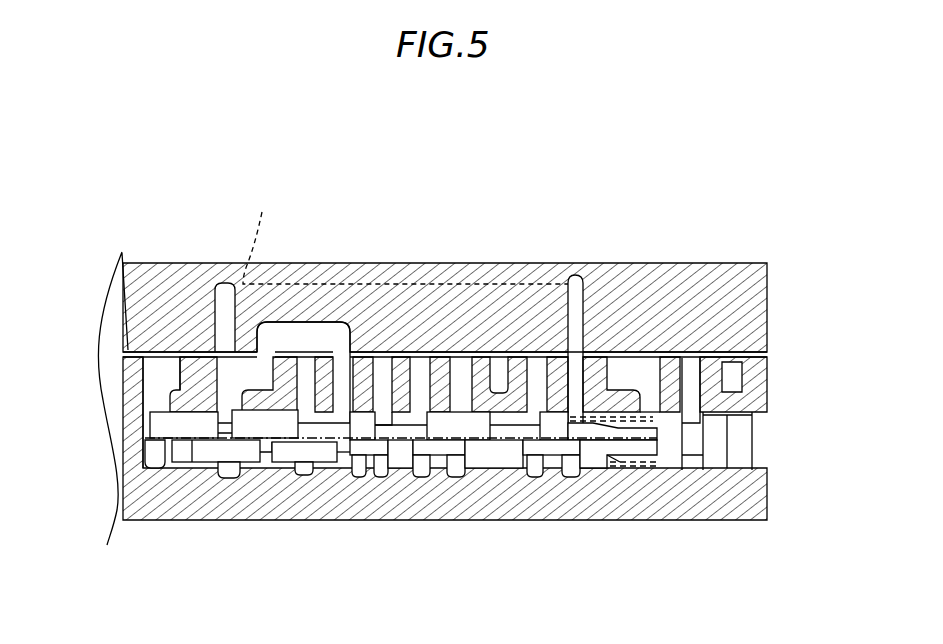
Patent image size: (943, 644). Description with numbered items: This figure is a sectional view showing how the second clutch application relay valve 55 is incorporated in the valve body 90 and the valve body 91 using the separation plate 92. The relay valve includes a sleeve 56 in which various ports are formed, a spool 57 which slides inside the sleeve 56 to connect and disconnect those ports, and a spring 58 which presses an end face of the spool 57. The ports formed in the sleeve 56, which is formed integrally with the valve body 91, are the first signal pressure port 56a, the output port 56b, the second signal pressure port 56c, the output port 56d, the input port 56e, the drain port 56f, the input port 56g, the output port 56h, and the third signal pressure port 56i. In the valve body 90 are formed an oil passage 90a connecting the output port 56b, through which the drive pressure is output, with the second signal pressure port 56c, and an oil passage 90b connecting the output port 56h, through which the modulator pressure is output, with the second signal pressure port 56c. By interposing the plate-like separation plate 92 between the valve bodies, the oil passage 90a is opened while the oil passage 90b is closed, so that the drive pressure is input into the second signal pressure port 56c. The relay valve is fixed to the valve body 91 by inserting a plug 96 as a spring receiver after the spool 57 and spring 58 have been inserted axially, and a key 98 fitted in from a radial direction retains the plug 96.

The second clutch application relay valve 55 is at (786, 450).
The sleeve 56 is at (258, 485).
The first signal pressure port 56a is at (162, 377).
The output port 56b is at (350, 327).
The second signal pressure port 56c is at (205, 368).
The output port 56d is at (422, 365).
The input port 56e is at (383, 365).
The drain port 56f is at (458, 365).
The input port 56g is at (532, 365).
The output port 56h is at (577, 367).
The third signal pressure port 56i is at (622, 370).
The spool 57 is at (162, 430).
The spring 58 is at (628, 465).
The valve body 90 is at (740, 292).
The oil passage 90a is at (293, 335).
The oil passage 90b is at (401, 234).
The valve body 91 is at (737, 402).
The separation plate 92 is at (665, 360).
The plug 96 is at (720, 460).
The key 98 is at (695, 373).